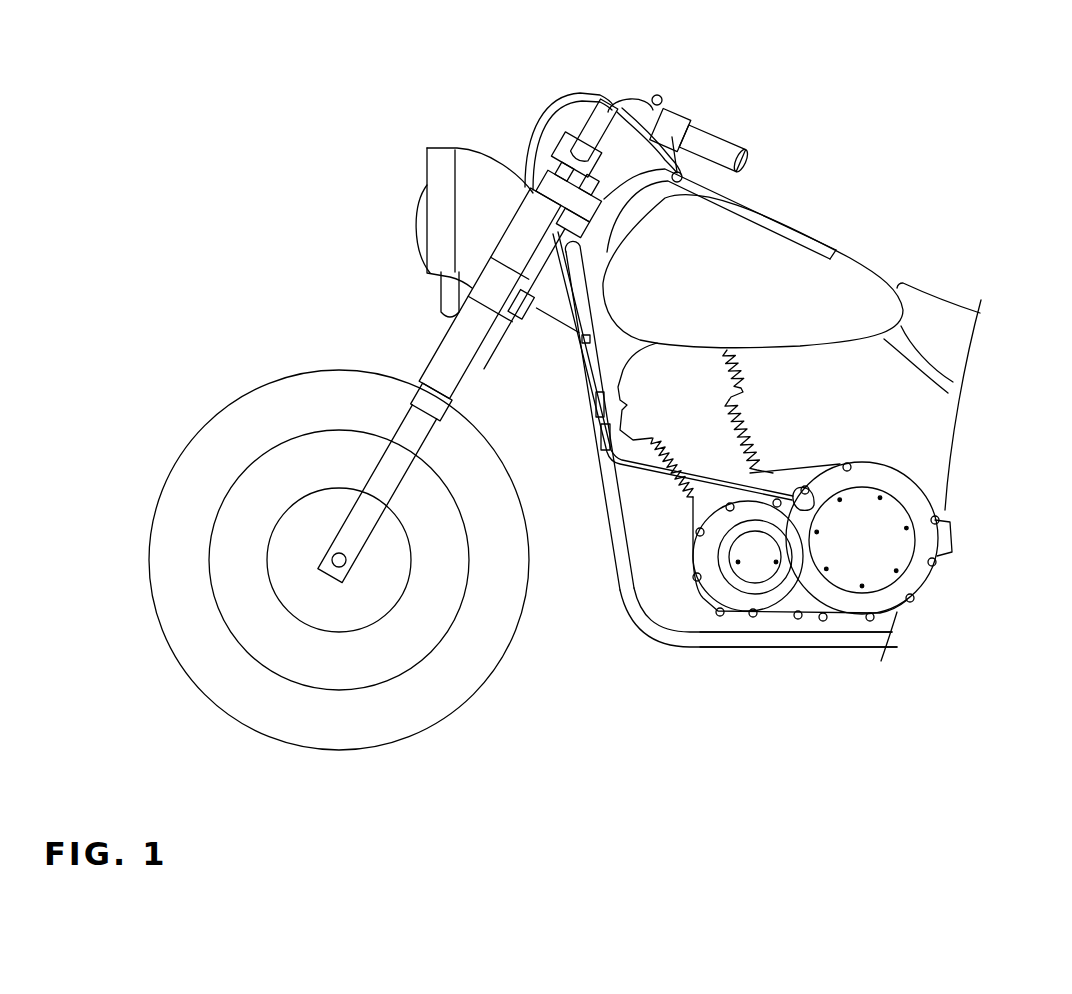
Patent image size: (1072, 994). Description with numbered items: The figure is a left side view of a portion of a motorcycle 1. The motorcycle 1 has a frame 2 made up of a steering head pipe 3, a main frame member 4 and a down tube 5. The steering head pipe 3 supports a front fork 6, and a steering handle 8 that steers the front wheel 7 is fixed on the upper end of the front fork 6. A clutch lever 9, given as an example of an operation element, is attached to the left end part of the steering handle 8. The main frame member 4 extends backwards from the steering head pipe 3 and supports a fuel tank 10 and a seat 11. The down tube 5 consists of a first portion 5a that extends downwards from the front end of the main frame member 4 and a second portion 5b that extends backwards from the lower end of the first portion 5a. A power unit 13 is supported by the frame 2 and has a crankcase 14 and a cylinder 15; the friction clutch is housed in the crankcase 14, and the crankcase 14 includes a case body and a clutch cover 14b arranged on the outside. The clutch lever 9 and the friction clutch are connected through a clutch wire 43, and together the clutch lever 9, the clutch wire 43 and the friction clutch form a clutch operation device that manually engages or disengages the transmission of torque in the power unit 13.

The motorcycle 1 is at (392, 140).
The frame 2 is at (547, 322).
The steering head pipe 3 is at (523, 245).
The main frame member 4 is at (590, 250).
The down tube 5 is at (650, 622).
The first portion 5a is at (620, 525).
The second portion 5b is at (813, 638).
The front fork 6 is at (452, 342).
The front wheel 7 is at (245, 415).
The steering handle 8 is at (636, 103).
The clutch lever 9 is at (722, 148).
The fuel tank 10 is at (848, 270).
The seat 11 is at (953, 335).
The power unit 13 is at (913, 467).
The crankcase 14 is at (930, 500).
The clutch cover 14b is at (893, 552).
The cylinder 15 is at (680, 357).
The clutch wire 43 is at (583, 368).